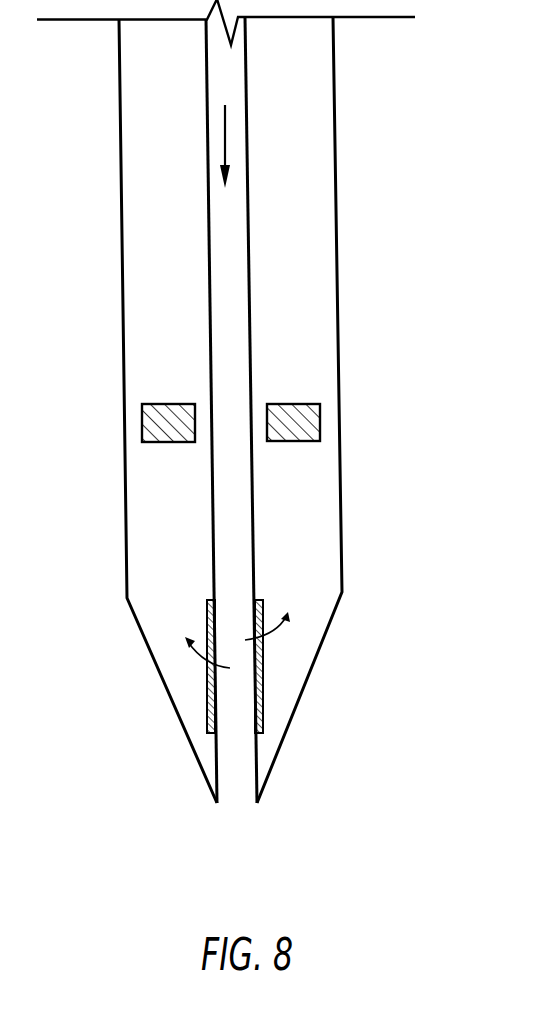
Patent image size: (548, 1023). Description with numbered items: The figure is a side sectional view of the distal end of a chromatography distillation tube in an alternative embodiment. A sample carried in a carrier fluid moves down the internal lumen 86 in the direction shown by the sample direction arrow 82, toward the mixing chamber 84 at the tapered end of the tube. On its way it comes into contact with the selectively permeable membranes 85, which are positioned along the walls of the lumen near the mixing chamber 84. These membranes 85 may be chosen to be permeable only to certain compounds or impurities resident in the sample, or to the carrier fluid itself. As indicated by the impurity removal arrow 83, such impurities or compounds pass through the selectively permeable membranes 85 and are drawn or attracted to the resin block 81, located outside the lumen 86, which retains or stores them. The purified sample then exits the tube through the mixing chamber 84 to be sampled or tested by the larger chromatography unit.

The resin block 81 is at (311, 420).
The sample direction arrow 82 is at (227, 138).
The impurity removal arrow 83 is at (248, 640).
The mixing chamber 84 is at (232, 783).
The selectively permeable membranes 85 is at (263, 692).
The internal lumen 86 is at (235, 247).